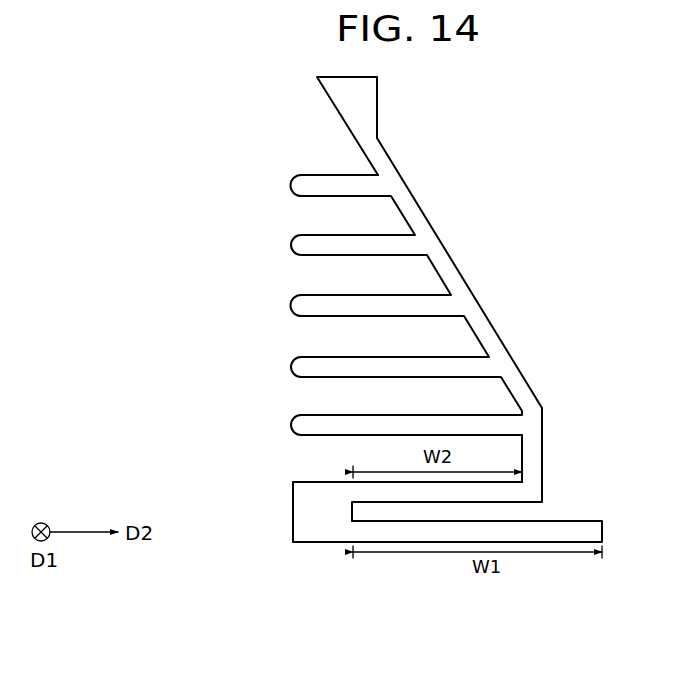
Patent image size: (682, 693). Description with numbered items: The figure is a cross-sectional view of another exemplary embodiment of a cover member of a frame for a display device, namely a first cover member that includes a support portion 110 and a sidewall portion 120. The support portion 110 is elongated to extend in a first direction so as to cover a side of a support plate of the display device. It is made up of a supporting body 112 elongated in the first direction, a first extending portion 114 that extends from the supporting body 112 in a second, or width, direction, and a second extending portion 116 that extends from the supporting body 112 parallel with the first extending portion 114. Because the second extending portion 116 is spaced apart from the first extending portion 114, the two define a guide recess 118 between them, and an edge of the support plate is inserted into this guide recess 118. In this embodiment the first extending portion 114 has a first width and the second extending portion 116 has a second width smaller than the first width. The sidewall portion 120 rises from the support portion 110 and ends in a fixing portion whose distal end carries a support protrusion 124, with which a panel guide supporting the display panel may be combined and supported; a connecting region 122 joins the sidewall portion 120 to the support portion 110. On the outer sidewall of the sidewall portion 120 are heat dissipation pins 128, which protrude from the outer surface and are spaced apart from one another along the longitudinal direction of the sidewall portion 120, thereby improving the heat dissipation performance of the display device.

The support portion 110 is at (455, 563).
The supporting body 112 is at (317, 530).
The first extending portion 114 is at (405, 530).
The second extending portion 116 is at (457, 490).
The guide recess 118 is at (537, 509).
The sidewall portion 120 is at (511, 351).
The vertical connecting portion 122 is at (535, 442).
The support protrusion 124 is at (363, 100).
The heat dissipation pins 128 is at (296, 366).